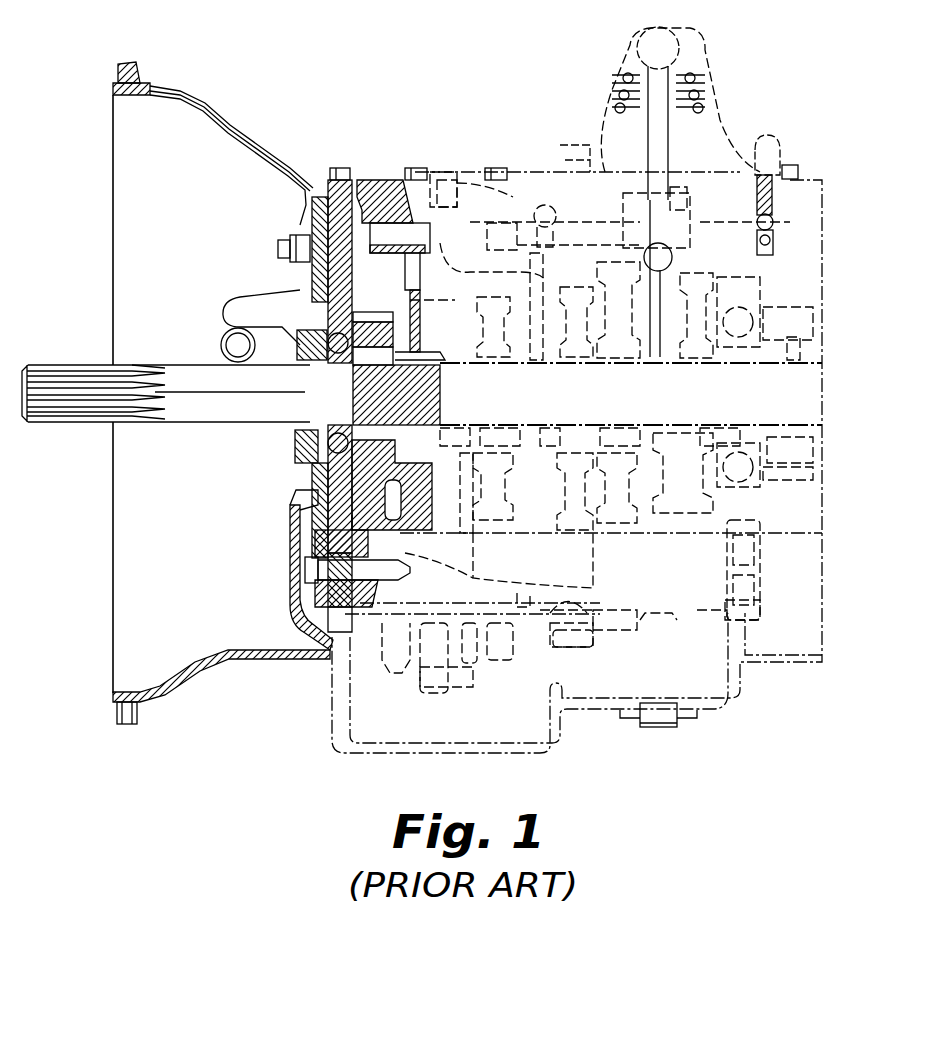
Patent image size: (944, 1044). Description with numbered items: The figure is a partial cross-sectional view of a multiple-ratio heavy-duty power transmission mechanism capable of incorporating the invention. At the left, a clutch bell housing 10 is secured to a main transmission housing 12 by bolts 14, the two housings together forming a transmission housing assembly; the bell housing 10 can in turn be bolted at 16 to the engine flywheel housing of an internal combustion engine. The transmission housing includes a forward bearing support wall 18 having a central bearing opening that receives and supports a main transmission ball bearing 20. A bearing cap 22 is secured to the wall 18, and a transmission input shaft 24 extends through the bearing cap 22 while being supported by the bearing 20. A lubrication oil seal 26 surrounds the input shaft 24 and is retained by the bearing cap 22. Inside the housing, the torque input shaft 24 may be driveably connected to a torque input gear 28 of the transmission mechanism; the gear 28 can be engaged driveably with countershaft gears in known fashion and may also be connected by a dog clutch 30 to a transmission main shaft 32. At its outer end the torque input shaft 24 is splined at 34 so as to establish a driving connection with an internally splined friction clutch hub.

The clutch bell housing 10 is at (244, 133).
The main transmission housing 12 is at (497, 190).
The bolts 14 is at (307, 212).
The bolting location 16 is at (140, 64).
The forward bearing support wall 18 is at (312, 268).
The main transmission ball bearing 20 is at (330, 465).
The bearing cap 22 is at (307, 340).
The transmission input shaft 24 is at (183, 412).
The lubrication oil seal 26 is at (300, 430).
The torque input gear 28 is at (378, 327).
The dog clutch 30 is at (417, 347).
The transmission main shaft 32 is at (430, 420).
The splines 34 is at (50, 380).